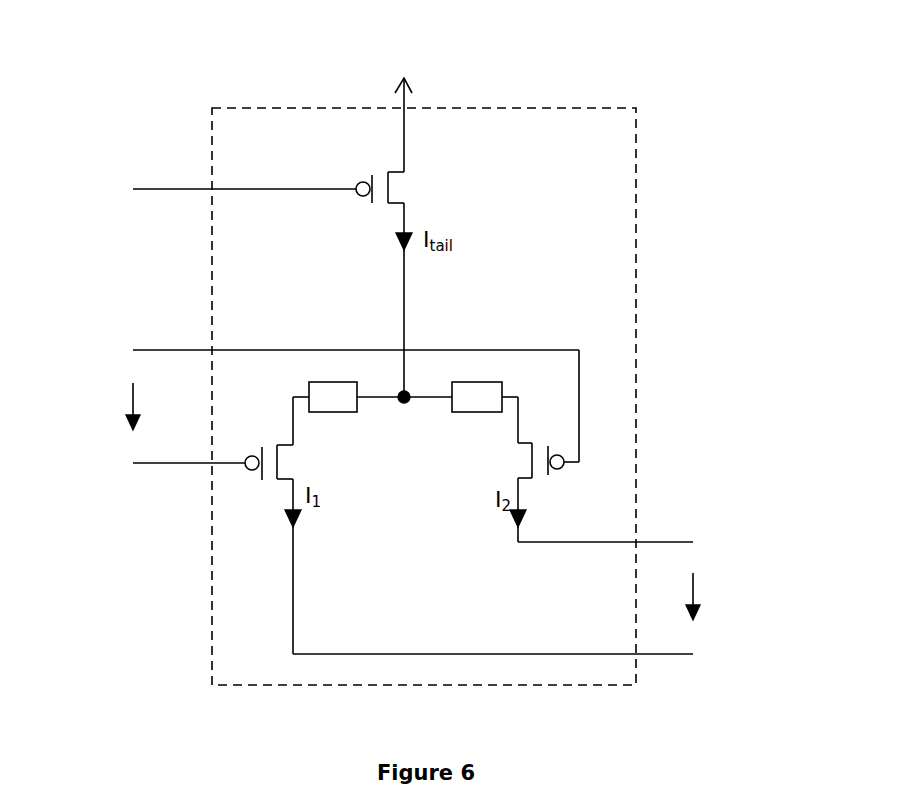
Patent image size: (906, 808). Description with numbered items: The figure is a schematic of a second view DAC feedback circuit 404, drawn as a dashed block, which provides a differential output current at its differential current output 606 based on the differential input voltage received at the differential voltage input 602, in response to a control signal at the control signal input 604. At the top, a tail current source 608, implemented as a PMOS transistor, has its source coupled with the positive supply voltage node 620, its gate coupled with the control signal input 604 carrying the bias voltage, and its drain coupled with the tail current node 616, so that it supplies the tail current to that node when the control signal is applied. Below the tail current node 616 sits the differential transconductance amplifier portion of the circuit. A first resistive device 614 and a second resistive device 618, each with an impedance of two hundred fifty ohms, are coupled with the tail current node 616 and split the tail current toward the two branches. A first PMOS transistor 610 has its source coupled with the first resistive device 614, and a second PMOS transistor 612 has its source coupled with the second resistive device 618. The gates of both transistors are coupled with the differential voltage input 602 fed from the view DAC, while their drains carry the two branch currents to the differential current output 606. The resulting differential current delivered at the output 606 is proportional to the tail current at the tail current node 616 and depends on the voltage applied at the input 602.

The second view DAC feedback circuit 404 is at (612, 144).
The differential voltage input 602 is at (175, 351).
The control signal input 604 is at (166, 189).
The differential current output 606 is at (668, 543).
The tail current source 608 is at (406, 148).
The first PMOS transistor 610 is at (292, 437).
The second PMOS transistor 612 is at (513, 413).
The first resistive device 614 is at (318, 381).
The tail current node 616 is at (405, 391).
The second resistive device 618 is at (477, 381).
The positive supply voltage node 620 is at (405, 80).